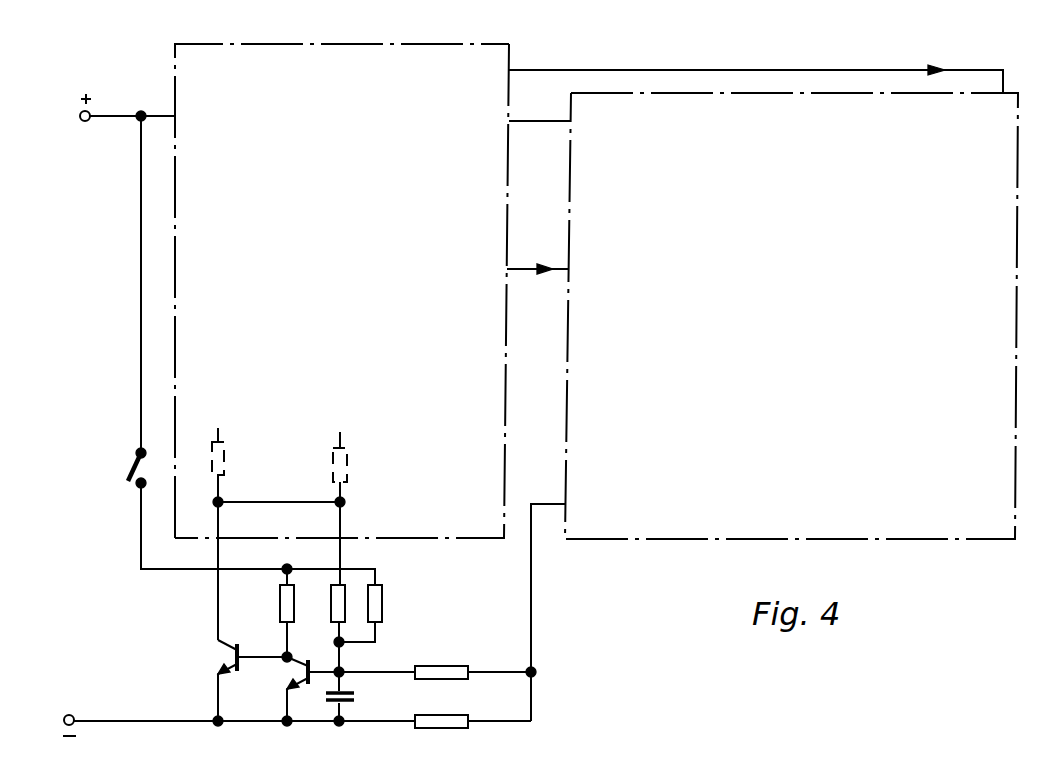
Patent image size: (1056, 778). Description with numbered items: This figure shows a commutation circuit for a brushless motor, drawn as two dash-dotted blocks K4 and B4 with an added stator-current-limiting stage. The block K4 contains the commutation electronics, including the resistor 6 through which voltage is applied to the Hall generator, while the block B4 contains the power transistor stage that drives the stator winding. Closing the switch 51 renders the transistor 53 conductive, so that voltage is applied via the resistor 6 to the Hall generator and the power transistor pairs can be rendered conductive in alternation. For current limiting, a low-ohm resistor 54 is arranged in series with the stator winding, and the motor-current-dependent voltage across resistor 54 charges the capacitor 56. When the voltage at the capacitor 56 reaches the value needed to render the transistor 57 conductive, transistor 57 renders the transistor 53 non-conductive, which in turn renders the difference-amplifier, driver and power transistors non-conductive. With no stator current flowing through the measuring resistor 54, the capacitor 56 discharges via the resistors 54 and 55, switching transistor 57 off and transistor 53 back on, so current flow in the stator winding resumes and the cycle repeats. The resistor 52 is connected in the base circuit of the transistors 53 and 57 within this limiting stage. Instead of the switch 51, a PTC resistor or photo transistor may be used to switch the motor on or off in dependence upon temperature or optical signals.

The control circuit K4 (=K1) K4 is at (322, 37).
The unit B4 (=B1) B4 is at (710, 96).
The resistor 6 is at (351, 467).
The switch 51 is at (124, 468).
The resistor 52 is at (273, 613).
The transistor 53 is at (238, 680).
The low-ohm resistor 54 is at (473, 710).
The resistor 55 is at (473, 661).
The capacitor 56 is at (355, 697).
The transistor 57 is at (298, 689).